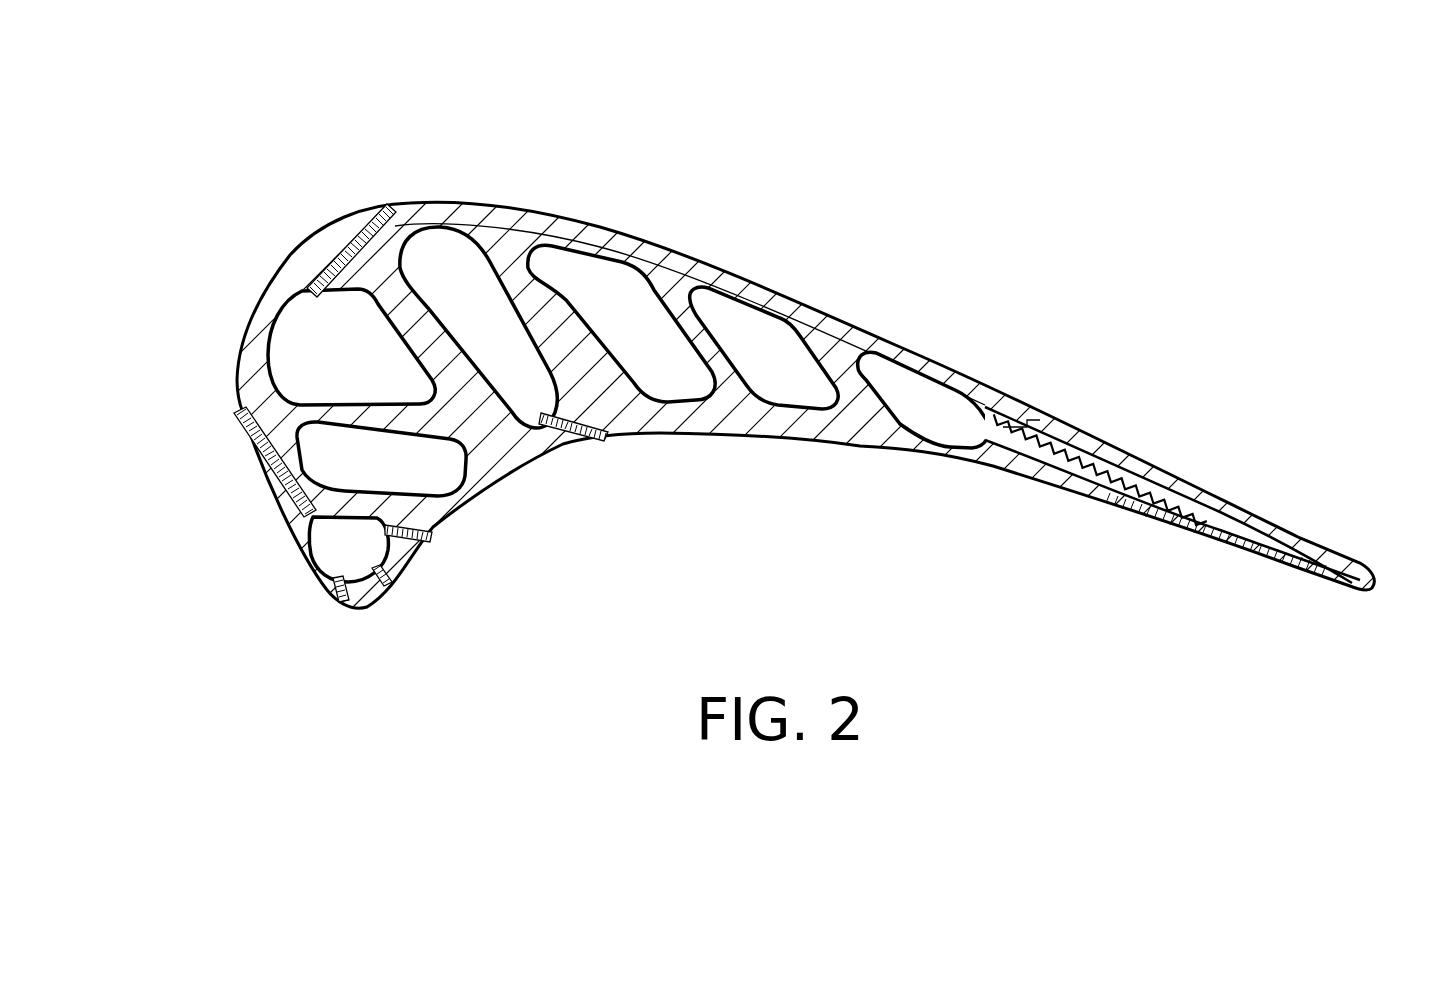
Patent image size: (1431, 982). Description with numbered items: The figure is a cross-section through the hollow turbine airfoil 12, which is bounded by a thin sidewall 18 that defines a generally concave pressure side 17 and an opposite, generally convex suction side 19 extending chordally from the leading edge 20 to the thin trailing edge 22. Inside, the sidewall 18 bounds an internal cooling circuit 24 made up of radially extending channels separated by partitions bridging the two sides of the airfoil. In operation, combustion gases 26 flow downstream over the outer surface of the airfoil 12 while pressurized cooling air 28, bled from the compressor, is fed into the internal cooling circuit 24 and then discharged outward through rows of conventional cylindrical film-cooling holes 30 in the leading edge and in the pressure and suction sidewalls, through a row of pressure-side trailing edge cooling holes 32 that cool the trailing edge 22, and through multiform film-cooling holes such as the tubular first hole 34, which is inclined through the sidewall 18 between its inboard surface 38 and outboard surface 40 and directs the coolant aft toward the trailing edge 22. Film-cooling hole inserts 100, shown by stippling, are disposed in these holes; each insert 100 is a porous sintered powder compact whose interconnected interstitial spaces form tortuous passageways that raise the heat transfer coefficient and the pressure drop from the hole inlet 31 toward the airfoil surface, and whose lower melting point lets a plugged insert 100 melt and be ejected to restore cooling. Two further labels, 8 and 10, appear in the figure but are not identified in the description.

The trailing edge cooling channel 8 is at (1015, 455).
The airfoil 10 is at (1000, 325).
The turbine airfoil 12 is at (1047, 388).
The pressure side 17 is at (727, 438).
The sidewall 18 is at (770, 424).
The suction side 19 is at (550, 206).
The leading edge 20 is at (362, 608).
The trailing edge 22 is at (1375, 585).
The internal cooling circuit 24 is at (357, 378).
The combustion gases 26 is at (150, 470).
The pressurized cooling air 28 is at (530, 403).
The film-cooling holes 30 is at (255, 443).
The inlet 31 is at (321, 291).
The trailing edge cooling holes 32 is at (1227, 548).
The first hole 34 is at (600, 440).
The inboard surface 38 is at (803, 404).
The outboard surface 40 is at (873, 443).
The film-cooling hole inserts 100 is at (336, 238).